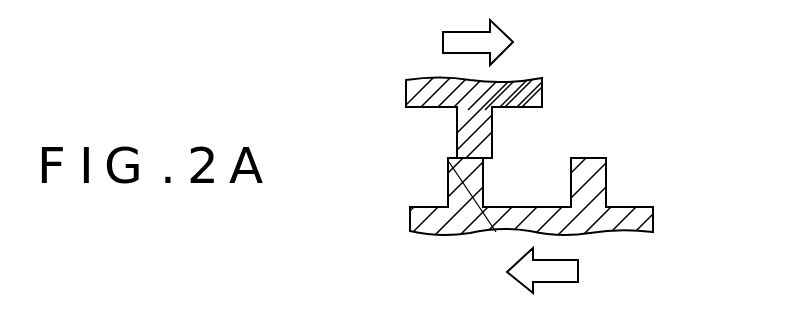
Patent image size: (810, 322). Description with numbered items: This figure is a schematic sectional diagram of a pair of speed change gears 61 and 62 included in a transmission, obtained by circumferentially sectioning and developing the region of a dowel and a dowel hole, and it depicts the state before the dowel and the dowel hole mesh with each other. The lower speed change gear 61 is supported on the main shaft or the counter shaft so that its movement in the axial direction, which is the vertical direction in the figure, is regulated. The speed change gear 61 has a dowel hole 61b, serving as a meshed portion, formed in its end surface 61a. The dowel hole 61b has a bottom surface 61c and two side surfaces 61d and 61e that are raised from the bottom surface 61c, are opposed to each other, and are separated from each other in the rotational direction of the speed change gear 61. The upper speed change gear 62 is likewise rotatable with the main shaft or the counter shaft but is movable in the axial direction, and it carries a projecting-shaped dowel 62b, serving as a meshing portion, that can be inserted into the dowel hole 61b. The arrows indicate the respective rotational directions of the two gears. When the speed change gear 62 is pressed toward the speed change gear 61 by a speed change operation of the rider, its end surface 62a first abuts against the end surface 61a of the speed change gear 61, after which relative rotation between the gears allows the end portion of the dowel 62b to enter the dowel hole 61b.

The speed change gear 61 is at (410, 218).
The end surface 61a is at (457, 142).
The dowel hole 61b is at (542, 184).
The bottom surface 61c is at (553, 207).
The side surface 61d is at (571, 168).
The side surface 61e is at (478, 173).
The speed change gear 62 is at (406, 96).
The end surface 62a is at (497, 162).
The dowel 62b is at (457, 122).